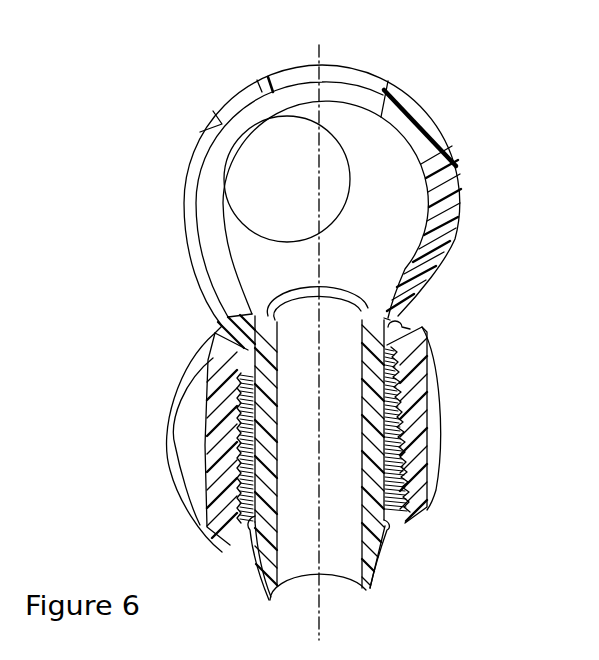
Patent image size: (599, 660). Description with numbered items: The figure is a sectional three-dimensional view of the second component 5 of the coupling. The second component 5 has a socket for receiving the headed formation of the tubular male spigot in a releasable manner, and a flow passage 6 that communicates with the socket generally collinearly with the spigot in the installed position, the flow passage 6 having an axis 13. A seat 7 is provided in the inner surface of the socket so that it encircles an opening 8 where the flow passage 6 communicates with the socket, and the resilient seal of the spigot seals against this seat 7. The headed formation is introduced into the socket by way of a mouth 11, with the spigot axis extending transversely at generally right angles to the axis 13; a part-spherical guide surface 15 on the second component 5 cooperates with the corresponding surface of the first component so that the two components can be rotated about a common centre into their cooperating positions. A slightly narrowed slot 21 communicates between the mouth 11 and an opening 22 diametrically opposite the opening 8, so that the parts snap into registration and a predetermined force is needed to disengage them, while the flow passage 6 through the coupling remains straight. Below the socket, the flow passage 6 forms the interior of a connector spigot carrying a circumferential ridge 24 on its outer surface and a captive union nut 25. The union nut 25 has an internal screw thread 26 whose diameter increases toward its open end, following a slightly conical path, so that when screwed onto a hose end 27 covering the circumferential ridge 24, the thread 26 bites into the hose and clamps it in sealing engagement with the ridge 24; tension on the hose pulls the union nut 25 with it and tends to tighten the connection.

The second component 5 is at (465, 286).
The flow passage 6 is at (335, 478).
The seat 7 is at (333, 313).
The opening 8 is at (392, 326).
The mouth 11 is at (212, 228).
The axis of the flow passage 13 is at (320, 609).
The guide surface 15 is at (398, 202).
The slot 21 is at (242, 107).
The opening 22 is at (343, 92).
The circumferential ridge 24 is at (385, 528).
The union nut 25 is at (417, 403).
The internal screw thread 26 is at (403, 435).
The hose end 27 is at (398, 435).